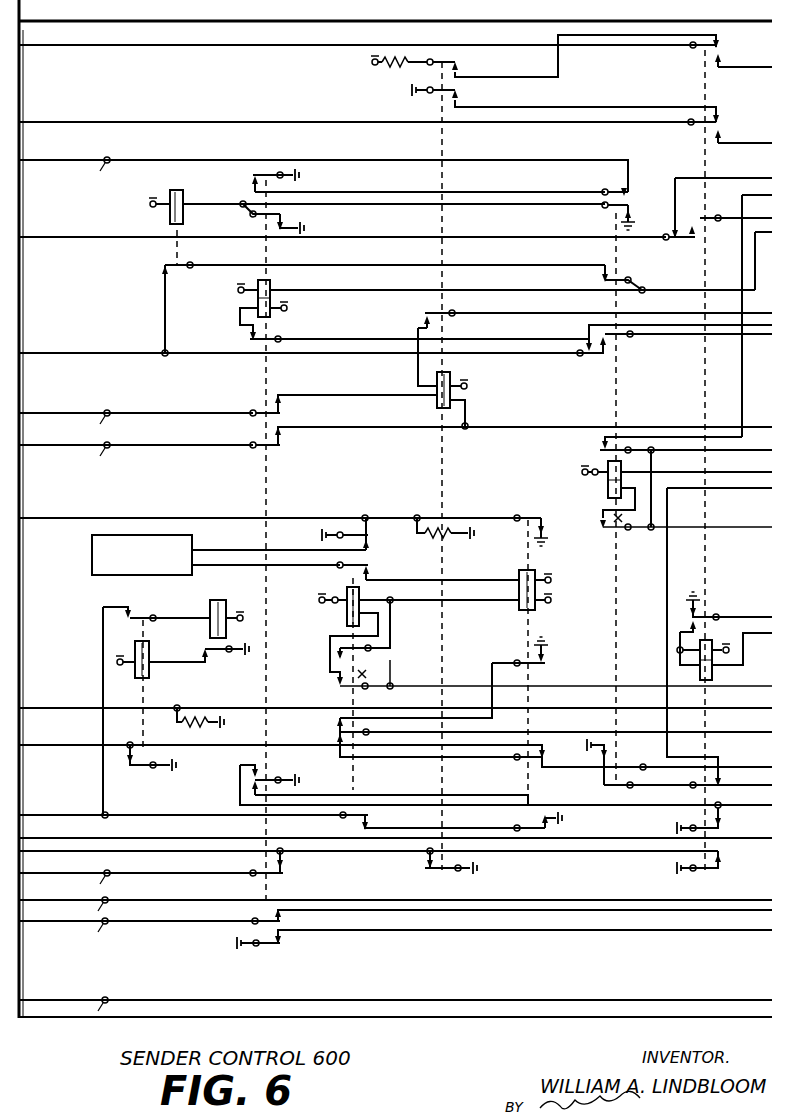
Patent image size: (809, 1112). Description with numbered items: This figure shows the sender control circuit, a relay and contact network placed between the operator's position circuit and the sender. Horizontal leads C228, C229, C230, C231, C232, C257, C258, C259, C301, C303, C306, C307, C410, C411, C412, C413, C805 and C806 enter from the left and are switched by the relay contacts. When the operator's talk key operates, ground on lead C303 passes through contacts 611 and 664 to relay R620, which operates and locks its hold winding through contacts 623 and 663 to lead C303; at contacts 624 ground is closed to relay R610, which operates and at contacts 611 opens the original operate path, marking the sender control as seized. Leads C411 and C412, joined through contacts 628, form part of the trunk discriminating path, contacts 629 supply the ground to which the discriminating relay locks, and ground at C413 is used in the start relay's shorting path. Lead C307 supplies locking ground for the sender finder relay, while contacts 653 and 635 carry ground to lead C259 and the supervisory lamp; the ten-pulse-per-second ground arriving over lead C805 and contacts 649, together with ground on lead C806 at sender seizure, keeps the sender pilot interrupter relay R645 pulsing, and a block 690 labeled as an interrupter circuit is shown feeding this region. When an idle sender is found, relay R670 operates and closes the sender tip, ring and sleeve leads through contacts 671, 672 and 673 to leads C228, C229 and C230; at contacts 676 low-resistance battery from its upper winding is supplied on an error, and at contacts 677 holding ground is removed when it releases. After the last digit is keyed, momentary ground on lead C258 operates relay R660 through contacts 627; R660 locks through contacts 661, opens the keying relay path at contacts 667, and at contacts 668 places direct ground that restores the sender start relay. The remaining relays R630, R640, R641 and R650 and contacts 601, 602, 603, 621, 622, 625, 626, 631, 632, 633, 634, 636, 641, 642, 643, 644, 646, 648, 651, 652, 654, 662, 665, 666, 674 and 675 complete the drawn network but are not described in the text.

The contact 601 is at (190, 730).
The contact 602 is at (393, 68).
The resistor-capacitor network 603 is at (445, 540).
The contacts 611 is at (158, 268).
The contact 621 is at (284, 870).
The contact 622 is at (262, 771).
The contacts 623 is at (247, 337).
The contacts 624 is at (285, 216).
The contact 625 is at (252, 182).
The contact 626 is at (284, 412).
The contacts 627 is at (284, 444).
The contacts 628 is at (284, 914).
The contacts 629 is at (284, 944).
The contact 631 is at (332, 683).
The contact 632 is at (370, 536).
The contact 633 is at (370, 568).
The contact 634 is at (330, 649).
The contacts 635 is at (337, 730).
The contact 636 is at (370, 820).
The contact 641 is at (458, 66).
The contact 642 is at (458, 94).
The contact 643 is at (423, 866).
The contact 644 is at (420, 318).
The contact 646 is at (204, 646).
The contact 648 is at (138, 607).
The contacts 649 is at (122, 762).
The contact 651 is at (533, 525).
The contact 652 is at (545, 662).
The contacts 653 is at (538, 760).
The contact 654 is at (532, 821).
The contacts 661 is at (598, 518).
The contact 662 is at (600, 784).
The contacts 663 is at (620, 345).
The contacts 664 is at (602, 281).
The contact 665 is at (630, 210).
The contact 666 is at (636, 184).
The contacts 667 is at (598, 446).
The contacts 668 is at (613, 742).
The contacts 671 is at (716, 50).
The contacts 672 is at (716, 126).
The contacts 673 is at (698, 226).
The contact 674 is at (720, 866).
The contact 675 is at (720, 782).
The contacts 676 is at (705, 612).
The contacts 677 is at (720, 826).
The 120 I.P.M. interrupter circuit 690 is at (90, 553).
The relay R610 is at (177, 183).
The relay R620 is at (272, 283).
The relay R630 is at (343, 584).
The relay R640 is at (450, 372).
The relay R641 is at (148, 678).
The sender pilot interrupter relay R645 is at (200, 598).
The relay R650 is at (533, 570).
The relay R660 is at (606, 486).
The relay R670 is at (712, 678).
The lead C228 is at (93, 40).
The lead C229 is at (93, 115).
The lead C230 is at (93, 231).
The conductor C231 is at (90, 511).
The conductor C232 is at (93, 862).
The conductor C257 is at (93, 406).
The lead C258 is at (93, 438).
The lead C259 is at (93, 701).
The conductor C301 is at (90, 885).
The lead C303 is at (93, 346).
The conductor C306 is at (93, 153).
The lead C307 is at (93, 831).
The conductor C410 is at (93, 995).
The lead C411 is at (90, 910).
The lead C412 is at (93, 934).
The ground connection C413 is at (90, 1016).
The lead C805 is at (93, 738).
The lead C806 is at (93, 808).